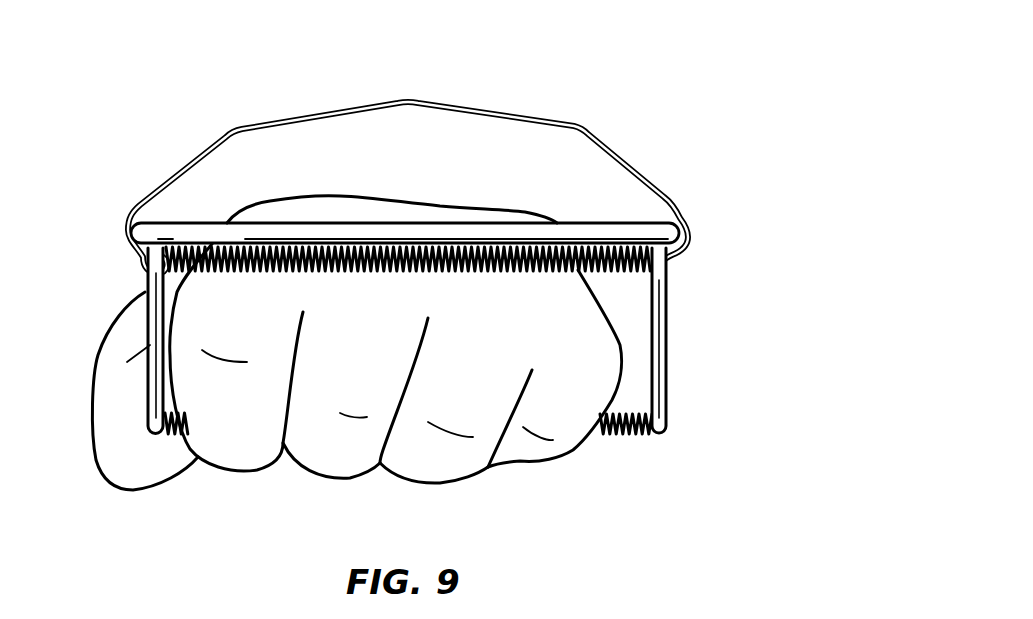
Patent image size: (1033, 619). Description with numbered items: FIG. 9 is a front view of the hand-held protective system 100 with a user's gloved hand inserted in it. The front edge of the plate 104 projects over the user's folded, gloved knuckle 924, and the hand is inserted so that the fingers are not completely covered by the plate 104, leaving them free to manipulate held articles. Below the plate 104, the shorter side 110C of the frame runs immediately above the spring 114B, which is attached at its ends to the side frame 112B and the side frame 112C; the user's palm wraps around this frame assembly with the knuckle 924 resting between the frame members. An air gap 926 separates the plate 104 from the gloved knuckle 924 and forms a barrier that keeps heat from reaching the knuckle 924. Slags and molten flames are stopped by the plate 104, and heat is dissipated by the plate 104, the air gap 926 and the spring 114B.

The hand-held protective system 100 is at (632, 95).
The plate 104 is at (643, 168).
The air gap 926 is at (547, 150).
The shorter side of frame 110C is at (188, 223).
The side frame 112B is at (147, 339).
The side frame 112C is at (668, 297).
The spring 114B is at (254, 283).
The gloved knuckle 924 is at (575, 450).